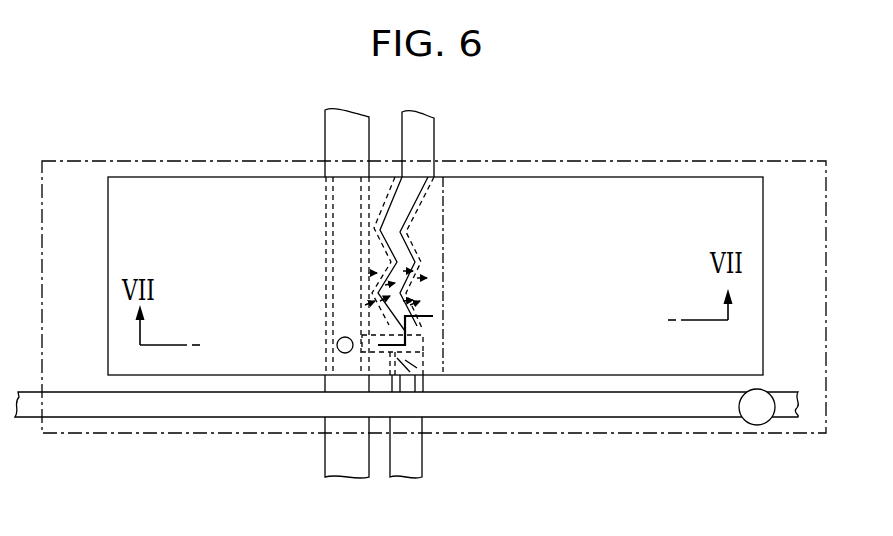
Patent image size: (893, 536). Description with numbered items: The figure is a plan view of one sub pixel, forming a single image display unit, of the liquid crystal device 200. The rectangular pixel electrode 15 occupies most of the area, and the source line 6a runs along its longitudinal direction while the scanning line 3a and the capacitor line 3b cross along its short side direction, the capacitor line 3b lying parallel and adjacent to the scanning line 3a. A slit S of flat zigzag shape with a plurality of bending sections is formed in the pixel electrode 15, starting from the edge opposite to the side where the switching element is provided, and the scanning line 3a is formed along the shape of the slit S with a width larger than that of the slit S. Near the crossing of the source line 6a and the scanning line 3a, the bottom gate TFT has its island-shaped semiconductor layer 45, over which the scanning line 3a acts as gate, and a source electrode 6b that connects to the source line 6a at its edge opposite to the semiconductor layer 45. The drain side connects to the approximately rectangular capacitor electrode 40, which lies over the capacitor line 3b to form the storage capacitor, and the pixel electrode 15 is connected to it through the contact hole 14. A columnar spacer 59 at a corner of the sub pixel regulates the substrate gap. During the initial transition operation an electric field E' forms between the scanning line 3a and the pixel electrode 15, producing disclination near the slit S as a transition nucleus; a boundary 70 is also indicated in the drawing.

The liquid crystal device 200 is at (726, 101).
The pixel electrode 15 is at (633, 177).
The scanning line 3a is at (426, 130).
The capacitor line 3b is at (332, 133).
The capacitor electrode 40 is at (345, 227).
The boundary line 70 is at (443, 221).
The slit S is at (388, 240).
The electric field E' is at (425, 281).
The contact hole 14 is at (337, 342).
The semiconductor layer 45 is at (423, 367).
The source line 6a is at (58, 407).
The source electrode 6b is at (405, 383).
The columnar spacer 59 is at (757, 413).